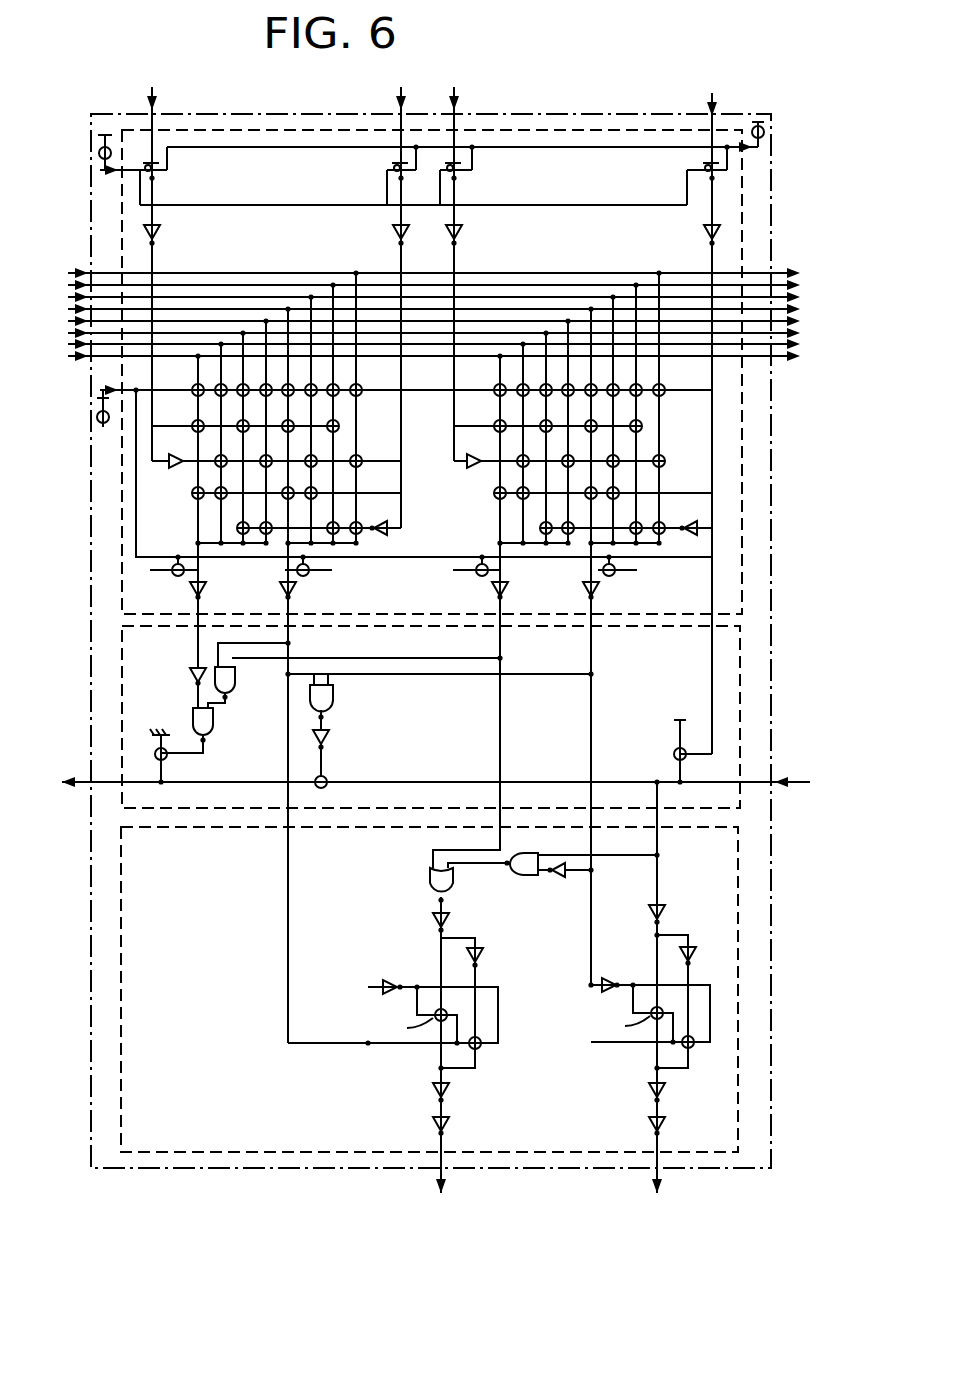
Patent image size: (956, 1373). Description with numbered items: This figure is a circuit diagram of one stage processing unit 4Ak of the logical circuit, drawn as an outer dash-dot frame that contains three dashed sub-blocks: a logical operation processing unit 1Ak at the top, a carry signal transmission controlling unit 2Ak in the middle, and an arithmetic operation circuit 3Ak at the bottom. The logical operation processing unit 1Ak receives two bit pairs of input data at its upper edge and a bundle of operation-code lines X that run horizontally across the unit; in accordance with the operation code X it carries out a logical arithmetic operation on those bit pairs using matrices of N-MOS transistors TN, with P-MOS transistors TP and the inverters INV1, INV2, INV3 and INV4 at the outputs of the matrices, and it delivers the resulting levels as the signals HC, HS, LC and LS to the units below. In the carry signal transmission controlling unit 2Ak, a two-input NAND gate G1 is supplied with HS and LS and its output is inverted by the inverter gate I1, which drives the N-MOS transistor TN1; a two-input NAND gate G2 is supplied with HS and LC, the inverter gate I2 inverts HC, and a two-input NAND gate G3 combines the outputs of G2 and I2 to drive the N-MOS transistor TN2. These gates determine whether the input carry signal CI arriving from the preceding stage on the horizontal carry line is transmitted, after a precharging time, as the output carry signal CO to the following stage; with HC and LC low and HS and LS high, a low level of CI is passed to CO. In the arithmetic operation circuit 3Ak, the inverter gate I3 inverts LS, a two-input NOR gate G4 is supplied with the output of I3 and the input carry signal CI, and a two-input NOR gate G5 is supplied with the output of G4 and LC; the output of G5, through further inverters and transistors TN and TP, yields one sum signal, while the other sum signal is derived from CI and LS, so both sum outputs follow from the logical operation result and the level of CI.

The logical operation processing unit 1Ak is at (553, 135).
The carry signal transmission controlling unit 2Ak is at (740, 795).
The arithmetic operation circuit 3Ak is at (318, 1152).
The stage processing unit 4Ak is at (102, 1169).
The operation code X is at (68, 273).
The N-MOS transistor TN is at (685, 526).
The P-MOS transistor TP is at (673, 755).
The inverter INV1 is at (585, 590).
The inverter INV2 is at (508, 588).
The inverter INV3 is at (282, 590).
The inverter INV4 is at (206, 588).
The high-order carry signal HC is at (196, 643).
The high-order sum signal HS is at (290, 643).
The low-order carry signal LC is at (497, 645).
The low-order sum signal LS is at (593, 643).
The output carry signal CO is at (60, 770).
The input carry signal CI is at (843, 770).
The inverter gate I1 is at (330, 752).
The inverter gate I2 is at (186, 681).
The inverter gate I3 is at (573, 883).
The two-input NAND gate G1 is at (336, 707).
The two-input NAND gate G2 is at (237, 687).
The two-input NAND gate G3 is at (203, 730).
The two-input NOR gate G4 is at (580, 877).
The two-input NOR gate G5 is at (456, 880).
The N-MOS transistor TN1 is at (328, 780).
The N-MOS transistor TN2 is at (170, 760).